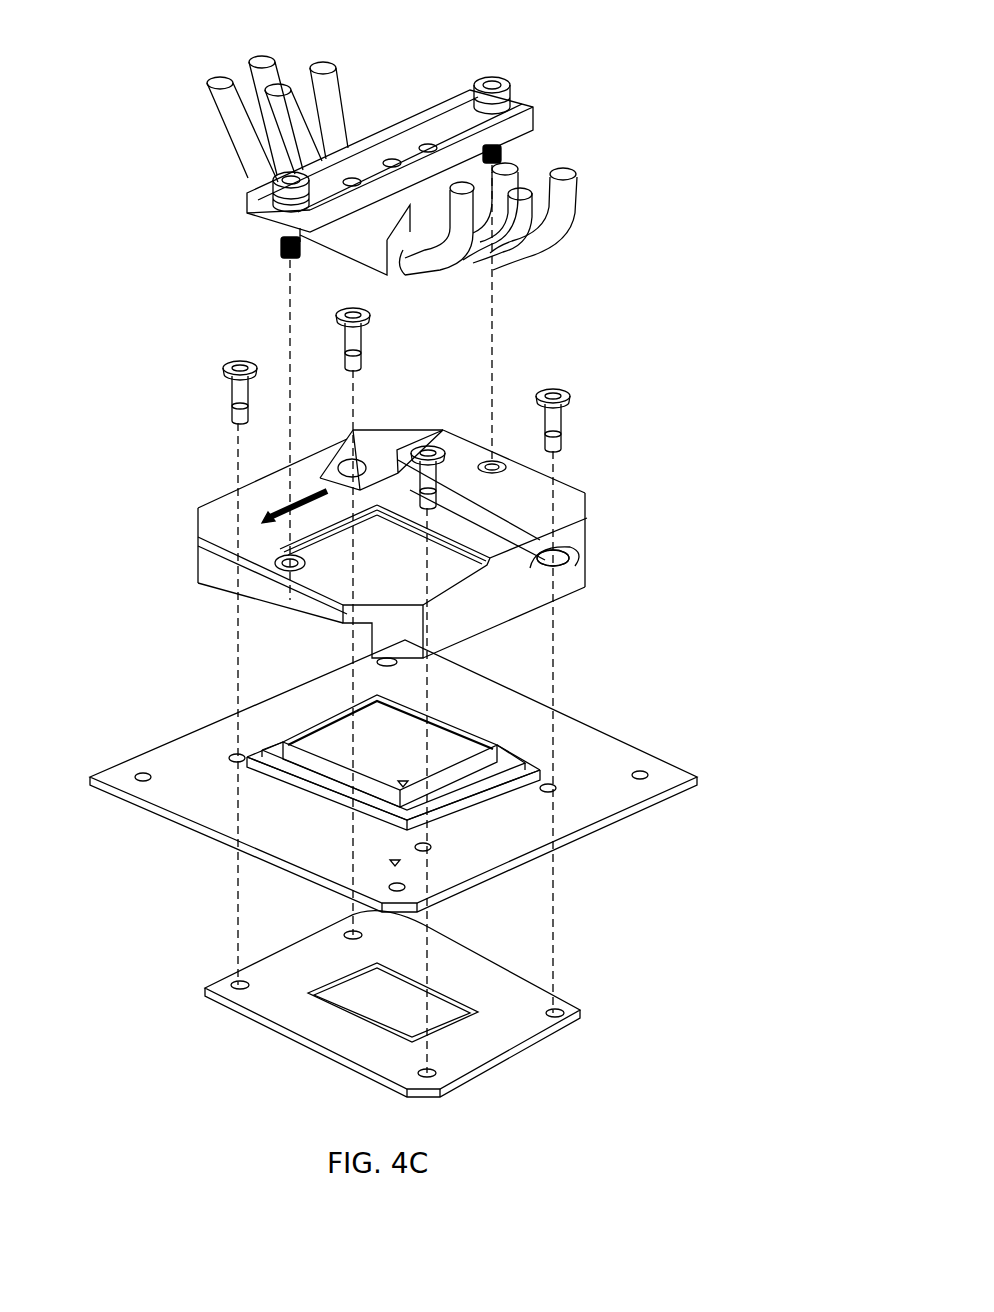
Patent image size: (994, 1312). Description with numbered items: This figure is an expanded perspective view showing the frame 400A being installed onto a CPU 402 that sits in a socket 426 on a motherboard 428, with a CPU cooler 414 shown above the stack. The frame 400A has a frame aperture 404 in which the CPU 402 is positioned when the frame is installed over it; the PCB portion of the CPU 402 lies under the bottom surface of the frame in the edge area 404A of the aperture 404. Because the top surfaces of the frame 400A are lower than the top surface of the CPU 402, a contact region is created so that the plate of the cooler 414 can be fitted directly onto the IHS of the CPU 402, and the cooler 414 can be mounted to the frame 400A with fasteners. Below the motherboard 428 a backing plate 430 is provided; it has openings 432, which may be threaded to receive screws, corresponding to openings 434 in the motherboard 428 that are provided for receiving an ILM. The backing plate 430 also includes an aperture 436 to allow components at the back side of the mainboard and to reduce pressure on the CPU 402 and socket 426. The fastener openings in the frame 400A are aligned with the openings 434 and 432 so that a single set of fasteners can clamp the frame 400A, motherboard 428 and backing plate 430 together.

The CPU cooler 414 is at (594, 104).
The frame 400A is at (620, 427).
The frame aperture 404 is at (207, 510).
The edge area 404A is at (493, 556).
The motherboard 428 is at (603, 792).
The CPU 402 is at (313, 757).
The socket 426 is at (540, 767).
The openings in the motherboard 434 is at (345, 700).
The backing plate 430 is at (312, 1052).
The aperture 436 is at (413, 998).
The openings in the backing plate 432 is at (352, 935).